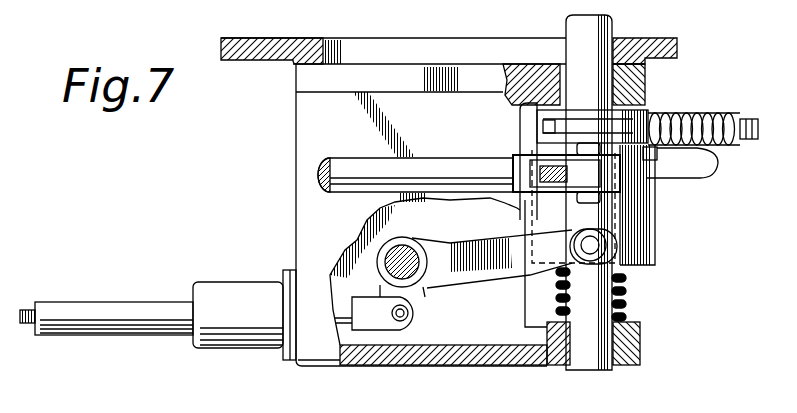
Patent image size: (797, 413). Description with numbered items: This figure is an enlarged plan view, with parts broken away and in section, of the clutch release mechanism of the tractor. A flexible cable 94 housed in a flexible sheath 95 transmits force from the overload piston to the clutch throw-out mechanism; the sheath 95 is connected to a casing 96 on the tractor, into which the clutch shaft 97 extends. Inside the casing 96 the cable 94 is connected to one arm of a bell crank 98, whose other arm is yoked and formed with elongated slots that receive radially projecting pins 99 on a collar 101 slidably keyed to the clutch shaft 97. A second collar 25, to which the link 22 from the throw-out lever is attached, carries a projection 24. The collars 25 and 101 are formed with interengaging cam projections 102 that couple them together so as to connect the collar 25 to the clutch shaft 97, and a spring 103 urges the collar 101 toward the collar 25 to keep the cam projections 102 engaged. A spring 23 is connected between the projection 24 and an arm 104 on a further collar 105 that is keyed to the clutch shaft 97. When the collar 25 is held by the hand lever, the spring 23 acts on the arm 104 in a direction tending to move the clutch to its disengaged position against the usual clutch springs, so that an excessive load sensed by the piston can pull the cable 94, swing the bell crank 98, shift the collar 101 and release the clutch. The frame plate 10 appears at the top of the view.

The frame plate 10 is at (660, 42).
The link 22 is at (433, 165).
The spring 23 is at (703, 112).
The projection 24 is at (716, 168).
The collar 25 is at (653, 193).
The flexible cable 94 is at (33, 310).
The flexible sheath 95 is at (87, 308).
The casing 96 is at (443, 362).
The clutch shaft 97 is at (606, 308).
The bell crank 98 is at (462, 270).
The pins 99 is at (597, 243).
The collar 101 is at (656, 240).
The cam projections 102 is at (567, 210).
The spring 103 is at (622, 290).
The arm 104 is at (643, 110).
The collar 105 is at (640, 108).